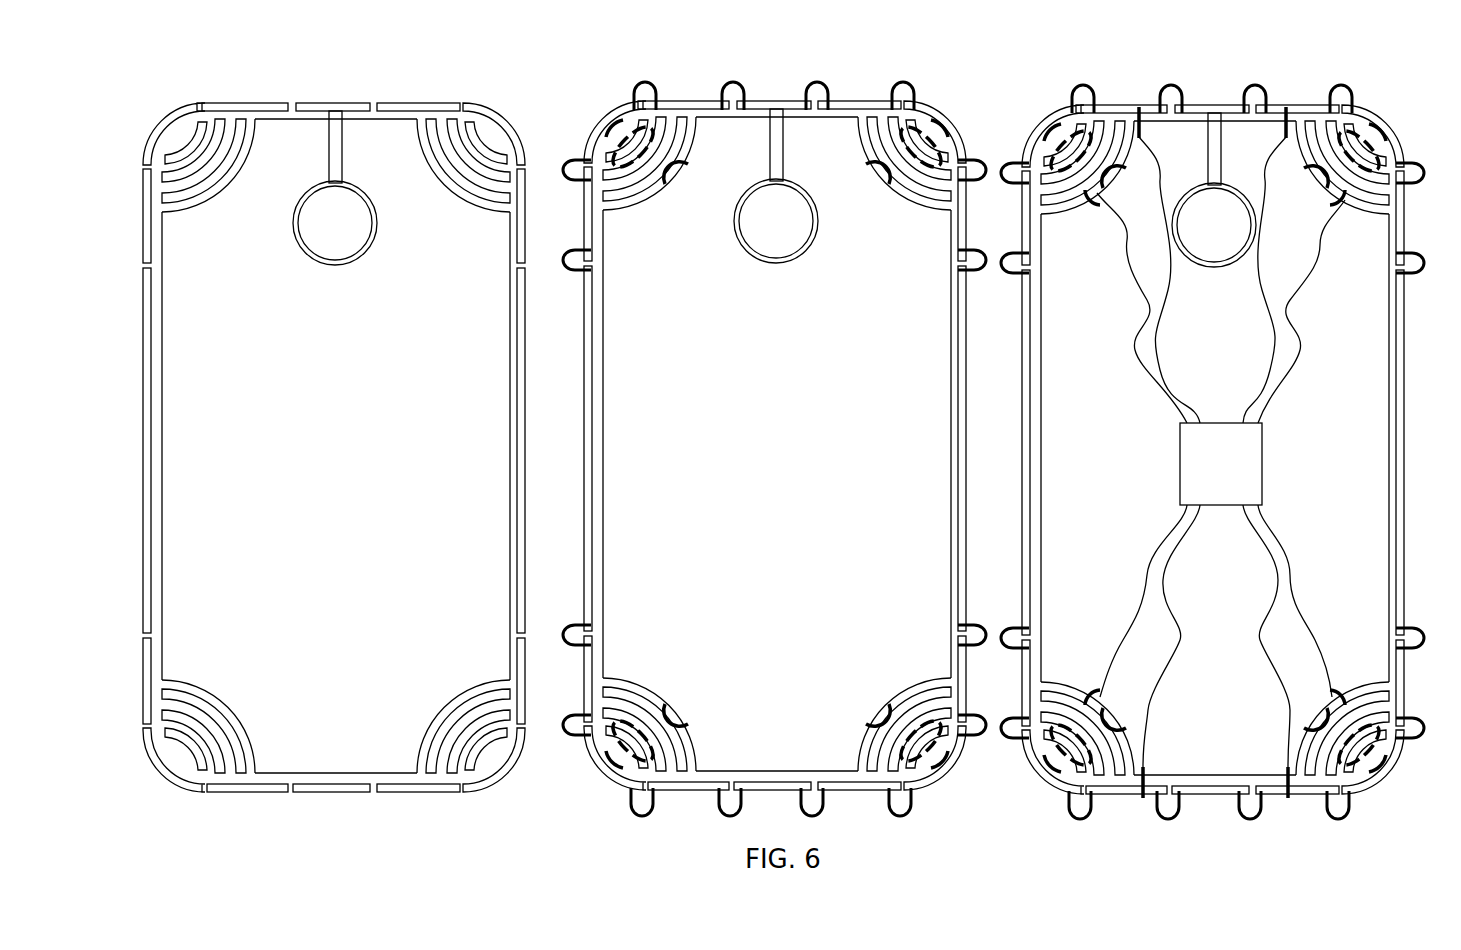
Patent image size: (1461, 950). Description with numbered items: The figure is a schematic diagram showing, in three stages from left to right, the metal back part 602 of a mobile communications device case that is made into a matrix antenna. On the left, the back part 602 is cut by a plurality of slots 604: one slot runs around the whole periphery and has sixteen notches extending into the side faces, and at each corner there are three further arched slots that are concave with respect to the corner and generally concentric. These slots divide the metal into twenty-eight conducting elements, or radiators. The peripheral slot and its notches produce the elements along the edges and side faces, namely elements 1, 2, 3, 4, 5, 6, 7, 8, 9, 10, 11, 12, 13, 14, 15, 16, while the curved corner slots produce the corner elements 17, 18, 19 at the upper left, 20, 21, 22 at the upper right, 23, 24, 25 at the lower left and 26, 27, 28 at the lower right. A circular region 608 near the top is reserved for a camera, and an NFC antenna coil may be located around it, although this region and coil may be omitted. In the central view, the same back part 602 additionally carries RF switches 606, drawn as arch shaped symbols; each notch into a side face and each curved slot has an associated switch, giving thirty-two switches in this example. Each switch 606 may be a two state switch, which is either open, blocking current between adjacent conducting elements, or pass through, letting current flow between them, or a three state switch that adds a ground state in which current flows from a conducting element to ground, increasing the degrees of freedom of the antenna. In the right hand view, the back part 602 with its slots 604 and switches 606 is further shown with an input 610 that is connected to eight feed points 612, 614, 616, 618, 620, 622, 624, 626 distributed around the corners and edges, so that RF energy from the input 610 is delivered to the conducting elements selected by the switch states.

The conducting element 1 is at (174, 134).
The conducting element 2 is at (245, 101).
The conducting element 3 is at (333, 101).
The conducting element 4 is at (418, 101).
The conducting element 5 is at (494, 134).
The conducting element 6 is at (531, 216).
The conducting element 7 is at (528, 450).
The conducting element 8 is at (528, 681).
The conducting element 9 is at (494, 760).
The conducting element 10 is at (418, 796).
The conducting element 11 is at (331, 796).
The conducting element 12 is at (247, 796).
The conducting element 13 is at (174, 760).
The conducting element 14 is at (141, 681).
The conducting element 15 is at (143, 450).
The conducting element 16 is at (145, 216).
The conducting element 17 is at (186, 143).
The conducting element 18 is at (193, 150).
The conducting element 19 is at (204, 161).
The conducting element 20 is at (486, 143).
The conducting element 21 is at (478, 150).
The conducting element 22 is at (468, 161).
The conducting element 23 is at (186, 749).
The conducting element 24 is at (193, 741).
The conducting element 25 is at (204, 731).
The conducting element 26 is at (468, 731).
The conducting element 27 is at (478, 741).
The conducting element 28 is at (486, 749).
The device body 602 is at (355, 431).
The slots 604 is at (560, 302).
The RF switches 606 is at (576, 158).
The circular region 608 is at (357, 259).
The input 610 is at (1236, 485).
The feed point 612 is at (1097, 205).
The feed point 614 is at (1140, 107).
The feed point 616 is at (1286, 107).
The feed point 618 is at (1343, 207).
The feed point 620 is at (1332, 697).
The feed point 622 is at (1288, 798).
The feed point 624 is at (1143, 798).
The feed point 626 is at (1097, 690).